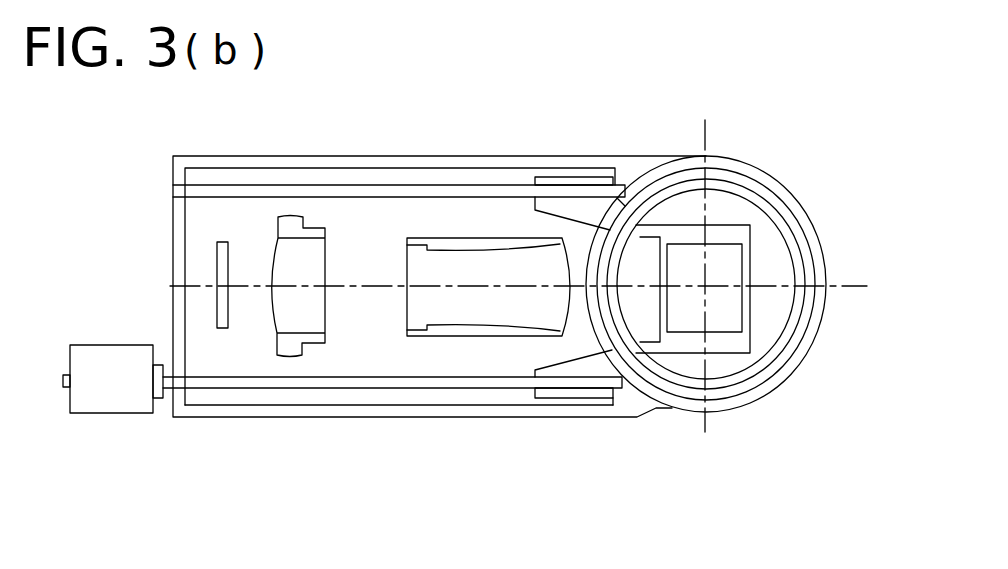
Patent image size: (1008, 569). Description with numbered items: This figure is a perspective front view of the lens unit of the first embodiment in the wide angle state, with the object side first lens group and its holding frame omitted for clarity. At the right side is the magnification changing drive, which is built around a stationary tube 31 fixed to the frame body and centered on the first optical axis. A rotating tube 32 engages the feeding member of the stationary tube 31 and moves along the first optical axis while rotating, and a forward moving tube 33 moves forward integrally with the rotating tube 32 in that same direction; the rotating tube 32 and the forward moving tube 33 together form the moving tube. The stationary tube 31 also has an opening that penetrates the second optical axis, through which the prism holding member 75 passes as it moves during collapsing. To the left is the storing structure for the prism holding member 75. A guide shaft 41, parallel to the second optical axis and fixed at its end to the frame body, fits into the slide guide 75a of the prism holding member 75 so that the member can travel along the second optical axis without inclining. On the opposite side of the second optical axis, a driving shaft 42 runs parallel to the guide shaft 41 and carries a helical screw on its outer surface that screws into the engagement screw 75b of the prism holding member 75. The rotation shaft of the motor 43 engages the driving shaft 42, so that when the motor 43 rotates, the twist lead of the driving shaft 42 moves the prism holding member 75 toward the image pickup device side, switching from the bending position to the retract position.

The stationary tube 31 is at (802, 352).
The rotating tube 32 is at (770, 377).
The forward moving tube 33 is at (738, 382).
The guide shaft 41 is at (405, 190).
The driving shaft 42 is at (342, 380).
The motor 43 is at (117, 404).
The prism holding member 75 is at (732, 230).
The slide guide 75a is at (573, 183).
The engagement screw 75b is at (560, 393).